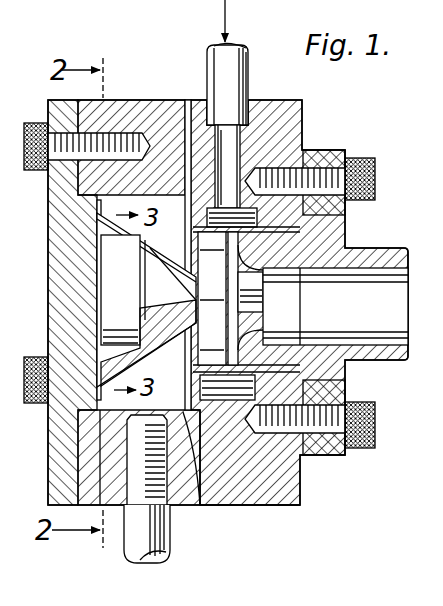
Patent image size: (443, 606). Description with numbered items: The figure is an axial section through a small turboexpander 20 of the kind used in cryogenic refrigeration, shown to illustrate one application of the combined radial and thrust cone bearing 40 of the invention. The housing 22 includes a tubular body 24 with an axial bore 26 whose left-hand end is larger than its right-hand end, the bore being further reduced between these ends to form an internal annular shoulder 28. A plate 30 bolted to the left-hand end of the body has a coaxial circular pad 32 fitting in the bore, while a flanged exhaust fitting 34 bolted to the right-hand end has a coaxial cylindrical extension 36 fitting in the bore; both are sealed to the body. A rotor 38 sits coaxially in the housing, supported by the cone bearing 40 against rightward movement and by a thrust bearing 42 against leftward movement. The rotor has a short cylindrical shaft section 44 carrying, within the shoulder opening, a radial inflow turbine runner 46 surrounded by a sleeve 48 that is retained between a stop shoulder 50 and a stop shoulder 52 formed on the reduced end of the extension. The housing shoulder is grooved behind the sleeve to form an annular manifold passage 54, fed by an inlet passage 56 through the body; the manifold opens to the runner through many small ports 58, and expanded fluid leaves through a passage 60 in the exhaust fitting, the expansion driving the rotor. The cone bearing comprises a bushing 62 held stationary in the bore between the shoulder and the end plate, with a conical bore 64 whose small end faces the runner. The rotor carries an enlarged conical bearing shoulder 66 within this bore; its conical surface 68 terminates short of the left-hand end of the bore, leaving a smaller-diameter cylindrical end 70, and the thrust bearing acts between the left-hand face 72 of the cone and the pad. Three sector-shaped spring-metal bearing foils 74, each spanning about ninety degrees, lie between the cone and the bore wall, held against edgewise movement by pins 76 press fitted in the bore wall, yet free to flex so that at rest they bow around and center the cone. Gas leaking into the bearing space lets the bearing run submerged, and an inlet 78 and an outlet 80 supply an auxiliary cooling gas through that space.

The turboexpander 20 is at (146, 73).
The housing 22 is at (292, 505).
The tubular body 24 is at (262, 506).
The bore 26 is at (120, 411).
The internal annular shoulder 28 is at (200, 505).
The plate 30 is at (64, 491).
The circular pad 32 is at (80, 395).
The flanged exhaust fitting 34 is at (340, 372).
The cylindrical extension 36 is at (302, 358).
The rotor 38 is at (150, 313).
The combined radial and thrust cone bearing 40 is at (132, 318).
The thrust bearing 42 is at (94, 291).
The cylindrical shaft section 44 is at (266, 320).
The turbine runner 46 is at (270, 284).
The sleeve 48 is at (282, 190).
The stop shoulder 50 is at (222, 196).
The stop shoulder 52 is at (270, 383).
The annular manifold passage 54 is at (272, 219).
The inlet passage 56 is at (238, 125).
The ports 58 is at (282, 412).
The exhaust passage 60 is at (396, 315).
The bushing 62 is at (97, 203).
The conical bore 64 is at (176, 262).
The conical bearing shoulder 66 is at (217, 298).
The conical surface 68 is at (175, 299).
The cylindrical end 70 is at (110, 256).
The left-hand face 72 is at (143, 292).
The bearing foils 74 is at (126, 238).
The pins 76 is at (100, 402).
The inlet 78 is at (178, 540).
The outlet 80 is at (188, 100).